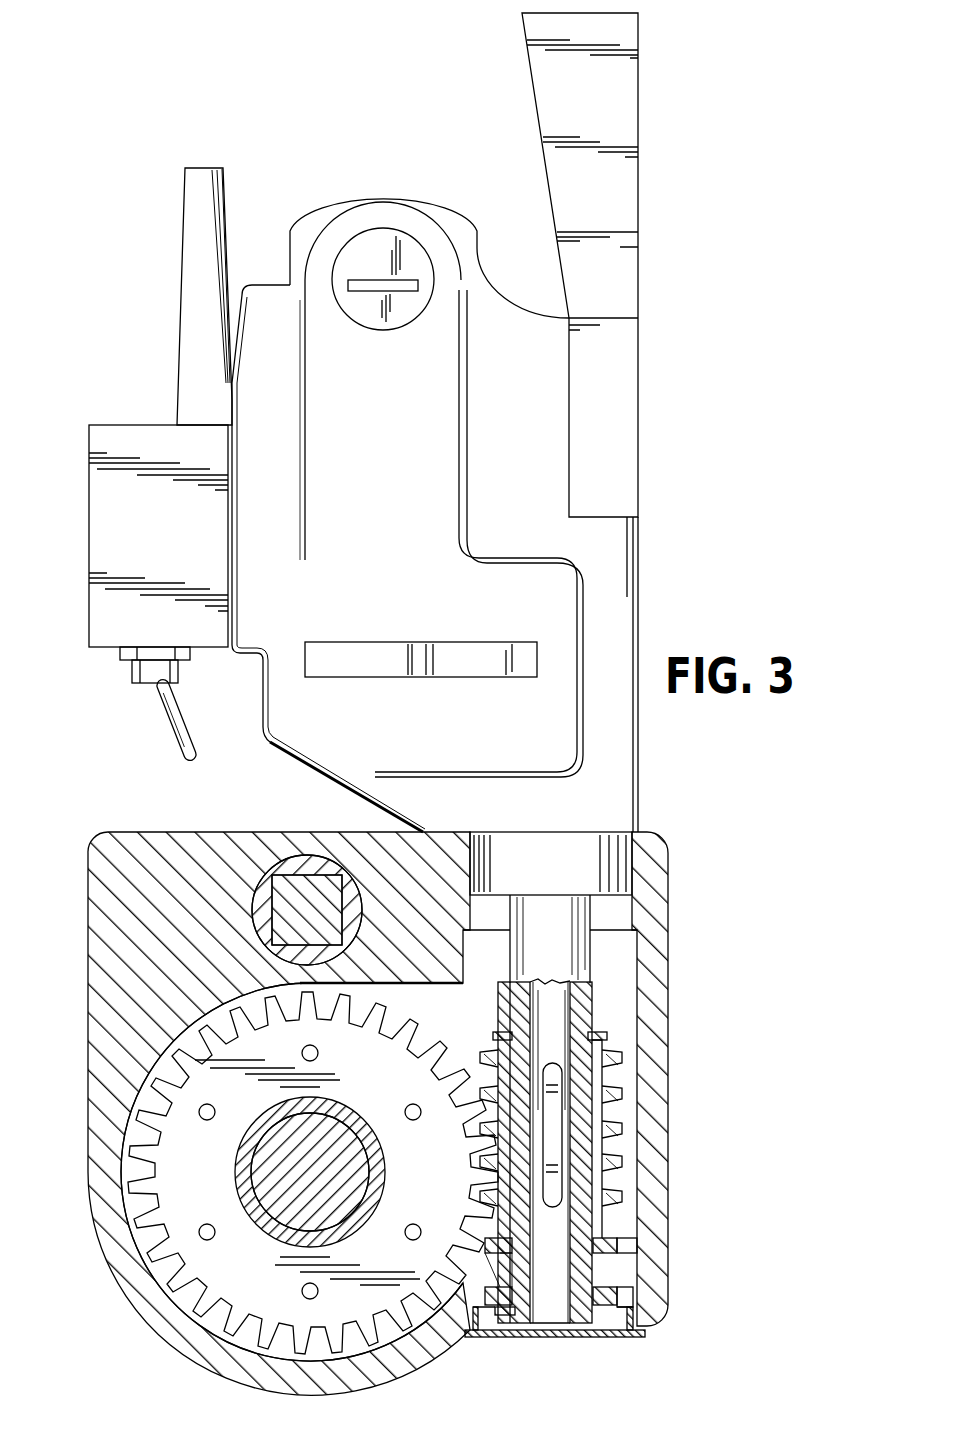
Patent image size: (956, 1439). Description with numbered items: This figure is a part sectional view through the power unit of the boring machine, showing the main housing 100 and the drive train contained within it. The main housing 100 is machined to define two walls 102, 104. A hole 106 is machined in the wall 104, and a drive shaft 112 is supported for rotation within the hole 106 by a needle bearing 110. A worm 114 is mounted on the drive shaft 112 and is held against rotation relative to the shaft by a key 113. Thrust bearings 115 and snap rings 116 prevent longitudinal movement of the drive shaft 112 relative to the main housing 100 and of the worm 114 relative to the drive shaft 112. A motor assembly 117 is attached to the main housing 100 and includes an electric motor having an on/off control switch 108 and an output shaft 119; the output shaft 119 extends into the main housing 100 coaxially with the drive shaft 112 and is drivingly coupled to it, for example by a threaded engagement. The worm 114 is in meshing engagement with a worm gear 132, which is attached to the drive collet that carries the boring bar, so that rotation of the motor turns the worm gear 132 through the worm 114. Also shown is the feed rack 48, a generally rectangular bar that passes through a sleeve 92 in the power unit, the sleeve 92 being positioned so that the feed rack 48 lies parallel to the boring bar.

The feed rack 48 is at (322, 890).
The sleeve 92 is at (300, 866).
The main housing 100 is at (132, 832).
The wall 102 is at (473, 1019).
The wall 104 is at (620, 1293).
The hole 106 is at (650, 1303).
The on/off control switch 108 is at (178, 748).
The needle bearing 110 is at (625, 1262).
The drive shaft 112 is at (580, 1322).
The key 113 is at (553, 1137).
The worm 114 is at (623, 1093).
The thrust bearings 115 is at (607, 1252).
The snap rings 116 is at (607, 1031).
The motor assembly 117 is at (643, 567).
The output shaft 119 is at (600, 912).
The worm gear 132 is at (128, 1215).